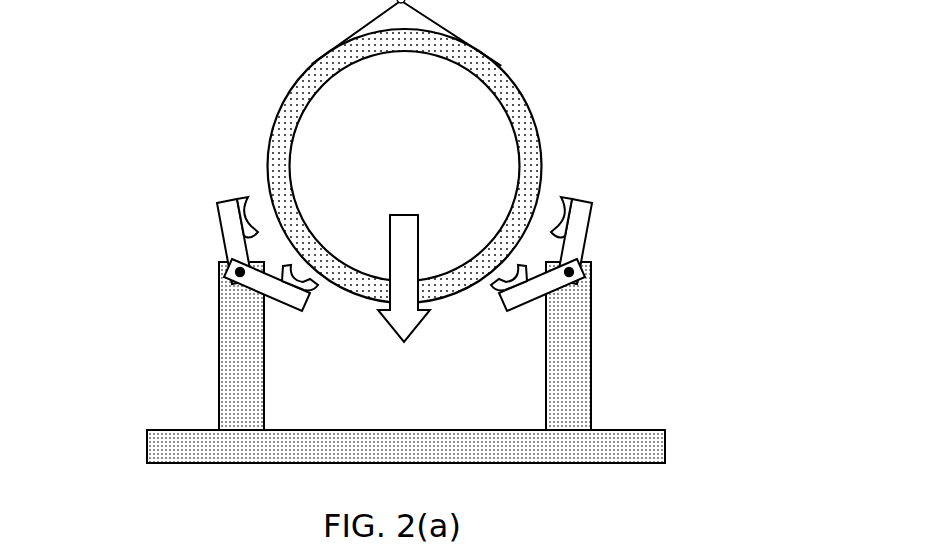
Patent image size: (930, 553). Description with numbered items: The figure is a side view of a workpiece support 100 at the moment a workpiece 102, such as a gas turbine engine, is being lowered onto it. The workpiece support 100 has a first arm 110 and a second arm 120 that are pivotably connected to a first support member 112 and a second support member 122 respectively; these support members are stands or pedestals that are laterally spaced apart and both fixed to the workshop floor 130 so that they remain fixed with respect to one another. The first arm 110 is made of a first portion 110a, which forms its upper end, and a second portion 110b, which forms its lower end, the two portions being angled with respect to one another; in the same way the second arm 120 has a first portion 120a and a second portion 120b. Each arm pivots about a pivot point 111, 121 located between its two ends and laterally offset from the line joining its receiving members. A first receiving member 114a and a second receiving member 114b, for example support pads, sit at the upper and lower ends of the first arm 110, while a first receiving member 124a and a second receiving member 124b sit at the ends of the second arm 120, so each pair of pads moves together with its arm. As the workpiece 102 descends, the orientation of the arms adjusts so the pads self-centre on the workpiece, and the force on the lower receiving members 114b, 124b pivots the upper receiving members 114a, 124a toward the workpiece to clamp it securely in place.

The workpiece support 100 is at (130, 267).
The workpiece 102 is at (500, 78).
The first arm 110 is at (245, 265).
The first portion of the first arm 110a is at (192, 209).
The second portion of the first arm 110b is at (293, 327).
The pivot point 111 is at (226, 279).
The first support member 112 is at (222, 358).
The first receiving member 114a is at (242, 197).
The second receiving member 114b is at (312, 293).
The second arm 120 is at (552, 276).
The first portion of the second arm 120a is at (614, 213).
The second portion of the second arm 120b is at (506, 335).
The pivot point 121 is at (578, 281).
The second support member 122 is at (582, 330).
The first receiving member 124a is at (567, 195).
The second receiving member 124b is at (497, 293).
The workshop floor 130 is at (535, 452).